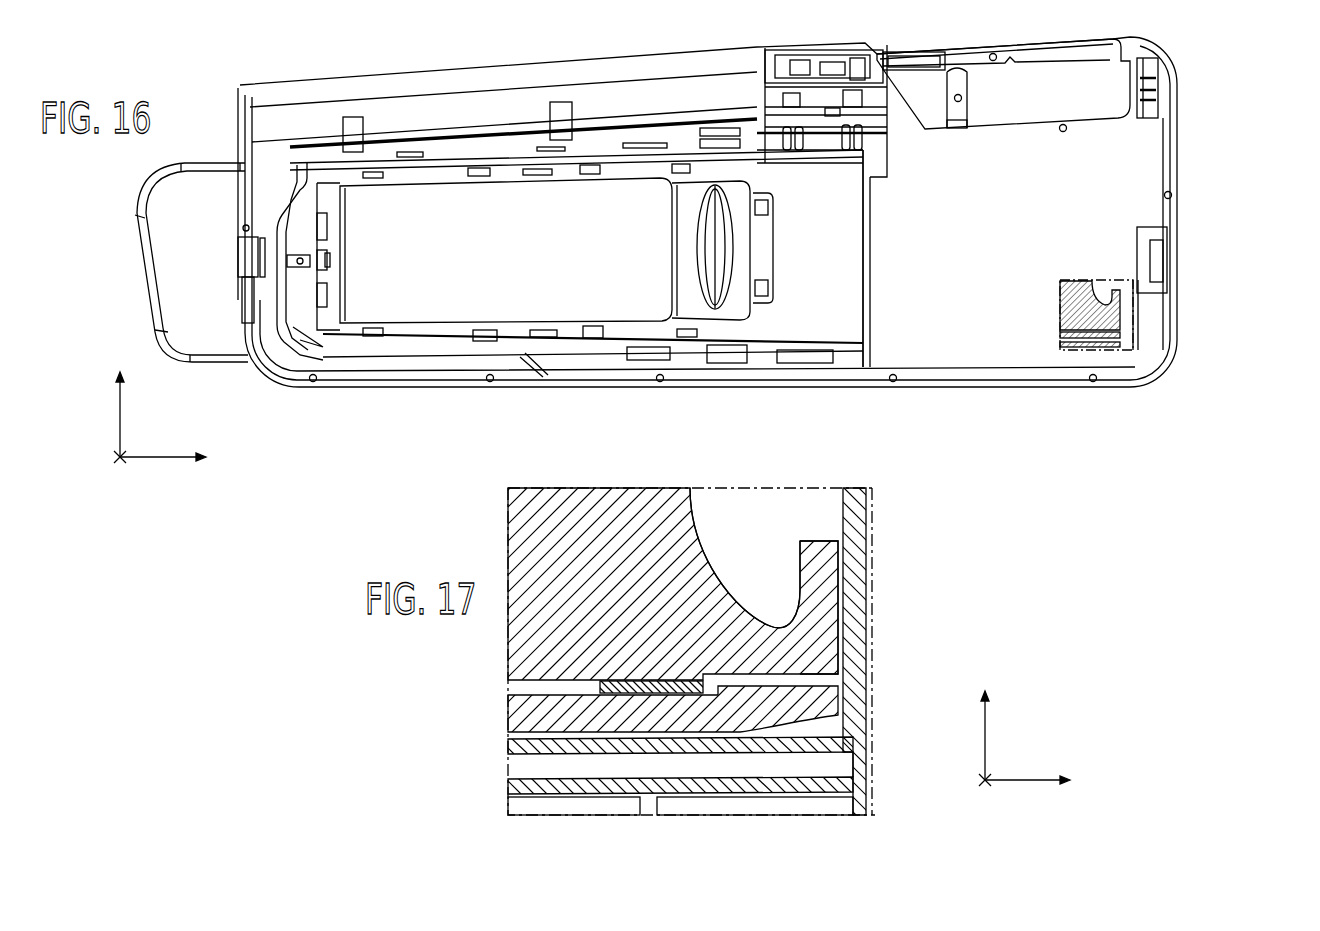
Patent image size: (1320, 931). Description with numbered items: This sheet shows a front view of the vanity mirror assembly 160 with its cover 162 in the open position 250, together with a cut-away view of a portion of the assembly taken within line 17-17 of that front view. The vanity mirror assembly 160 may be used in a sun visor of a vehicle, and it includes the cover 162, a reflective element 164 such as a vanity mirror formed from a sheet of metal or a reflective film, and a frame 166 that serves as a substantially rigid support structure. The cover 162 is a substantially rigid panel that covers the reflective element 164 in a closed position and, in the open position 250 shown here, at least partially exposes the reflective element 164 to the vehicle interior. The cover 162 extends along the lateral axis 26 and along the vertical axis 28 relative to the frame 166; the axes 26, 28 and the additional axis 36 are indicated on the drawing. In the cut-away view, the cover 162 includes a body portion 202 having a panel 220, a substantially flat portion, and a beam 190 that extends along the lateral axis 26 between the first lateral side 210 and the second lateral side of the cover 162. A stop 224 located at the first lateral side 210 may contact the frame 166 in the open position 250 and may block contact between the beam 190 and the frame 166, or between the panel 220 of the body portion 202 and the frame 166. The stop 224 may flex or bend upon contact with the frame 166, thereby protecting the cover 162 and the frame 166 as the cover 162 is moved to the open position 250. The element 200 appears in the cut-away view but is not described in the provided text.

In FIG. 16, the vanity mirror assembly 160 is at (1203, 72).
In FIG. 17, the vanity mirror assembly 160 is at (481, 516).
In FIG. 16, the cover 162 is at (690, 305).
In FIG. 17, the cover 162 is at (546, 474).
In FIG. 16, the reflective element 164 is at (437, 293).
In FIG. 16, the frame 166 is at (818, 330).
In FIG. 17, the frame 166 is at (853, 623).
In FIG. 16, the open position 250 is at (812, 399).
In FIG. 16, the line 17- 17 is at (1052, 300).
In FIG. 17, the body portion 202 is at (578, 518).
In FIG. 17, the panel 220 is at (603, 503).
In FIG. 17, the stop 224 is at (823, 556).
In FIG. 17, the beam 190 is at (777, 710).
In FIG. 17, the pad 200 is at (620, 688).
In FIG. 17, the first lateral side 210 is at (984, 621).
In FIG. 16, the lateral axis 26 is at (160, 456).
In FIG. 17, the lateral axis 26 is at (1025, 779).
In FIG. 16, the vertical axis 28 is at (118, 418).
In FIG. 17, the vertical axis 28 is at (983, 745).
In FIG. 16, the z axis 36 is at (116, 458).
In FIG. 17, the z axis 36 is at (980, 783).